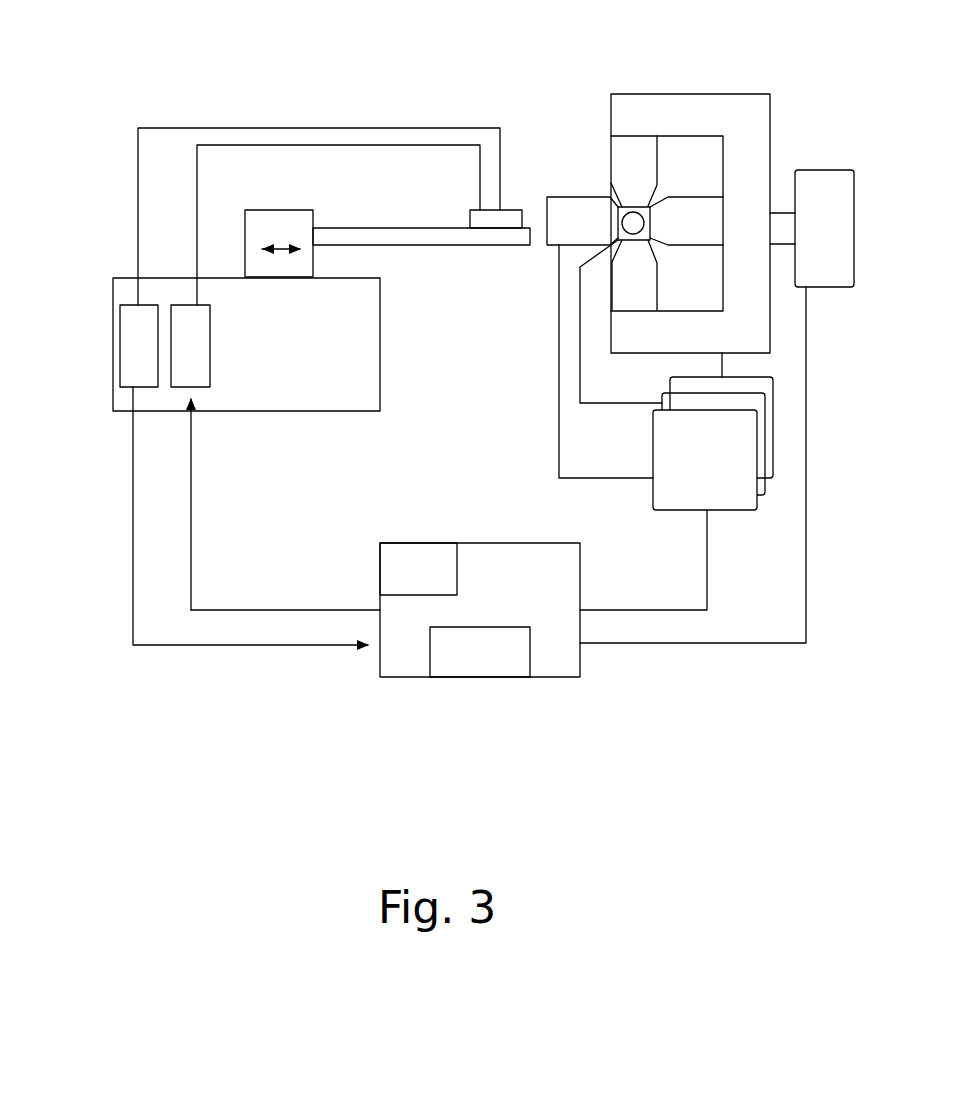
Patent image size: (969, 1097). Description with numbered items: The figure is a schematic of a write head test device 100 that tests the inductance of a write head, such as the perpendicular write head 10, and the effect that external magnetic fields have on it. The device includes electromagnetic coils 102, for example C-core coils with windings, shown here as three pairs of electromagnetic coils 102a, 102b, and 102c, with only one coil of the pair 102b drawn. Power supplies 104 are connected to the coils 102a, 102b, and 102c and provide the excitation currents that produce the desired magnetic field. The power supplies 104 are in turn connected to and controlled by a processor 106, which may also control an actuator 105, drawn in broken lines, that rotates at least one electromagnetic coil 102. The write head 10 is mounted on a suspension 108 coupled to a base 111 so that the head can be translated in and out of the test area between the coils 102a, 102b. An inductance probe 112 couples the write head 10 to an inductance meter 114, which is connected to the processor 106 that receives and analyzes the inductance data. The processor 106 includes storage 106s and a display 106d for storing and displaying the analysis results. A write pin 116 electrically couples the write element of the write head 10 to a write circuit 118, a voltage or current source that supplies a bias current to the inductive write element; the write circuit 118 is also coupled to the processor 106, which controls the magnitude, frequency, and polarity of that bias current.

The write head test device 100 is at (220, 33).
The perpendicular write head 10 is at (505, 245).
The electromagnetic coils 102 is at (770, 108).
The electromagnetic coil pair 102a is at (580, 197).
The electromagnetic coil pair 102b is at (650, 207).
The electromagnetic coil pair 102c is at (611, 137).
The power supplies 104 is at (666, 425).
The actuator 105 is at (847, 287).
The processor 106 is at (550, 677).
The storage 106s is at (379, 560).
The display 106d is at (480, 677).
The suspension 108 is at (395, 228).
The base 111 is at (380, 397).
The inductance probe 112 is at (413, 127).
The inductance meter 114 is at (113, 342).
The write pin 116 is at (310, 145).
The write circuit 118 is at (210, 347).